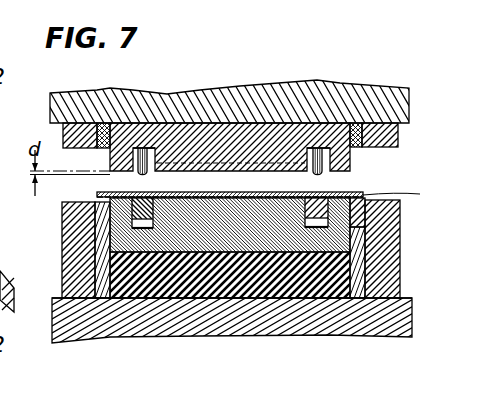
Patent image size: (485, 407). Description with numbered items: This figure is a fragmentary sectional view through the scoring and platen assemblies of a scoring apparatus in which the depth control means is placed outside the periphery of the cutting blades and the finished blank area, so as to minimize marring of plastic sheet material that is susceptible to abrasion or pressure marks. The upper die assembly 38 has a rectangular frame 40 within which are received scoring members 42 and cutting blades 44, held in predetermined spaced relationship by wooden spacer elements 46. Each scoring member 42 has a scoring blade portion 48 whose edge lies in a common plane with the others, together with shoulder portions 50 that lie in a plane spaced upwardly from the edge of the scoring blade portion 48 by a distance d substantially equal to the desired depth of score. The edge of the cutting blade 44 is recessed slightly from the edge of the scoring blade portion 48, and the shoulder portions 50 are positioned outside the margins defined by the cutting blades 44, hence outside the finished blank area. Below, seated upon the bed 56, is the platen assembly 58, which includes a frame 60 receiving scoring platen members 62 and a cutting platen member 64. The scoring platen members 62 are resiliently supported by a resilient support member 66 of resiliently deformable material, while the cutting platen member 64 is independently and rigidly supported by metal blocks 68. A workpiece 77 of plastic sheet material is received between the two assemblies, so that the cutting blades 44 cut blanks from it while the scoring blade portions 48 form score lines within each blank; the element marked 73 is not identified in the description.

The die assembly 38 is at (402, 134).
The rectangular frame 40 is at (72, 128).
The scoring members 42 is at (231, 124).
The cutting blades 44 is at (142, 175).
The wooden spacer elements 46 is at (102, 138).
The scoring blade portions 48 is at (186, 182).
The shoulder portions 50 is at (125, 158).
The bed 56 is at (87, 323).
The platen assembly 58 is at (57, 279).
The frame 60 is at (75, 298).
The scoring platen members 62 is at (224, 292).
The cutting platen member 64 is at (112, 216).
The resilient support member 66 is at (283, 297).
The metal blocks 68 is at (102, 300).
The frame 73 is at (19, 395).
The workpiece 77 is at (406, 193).